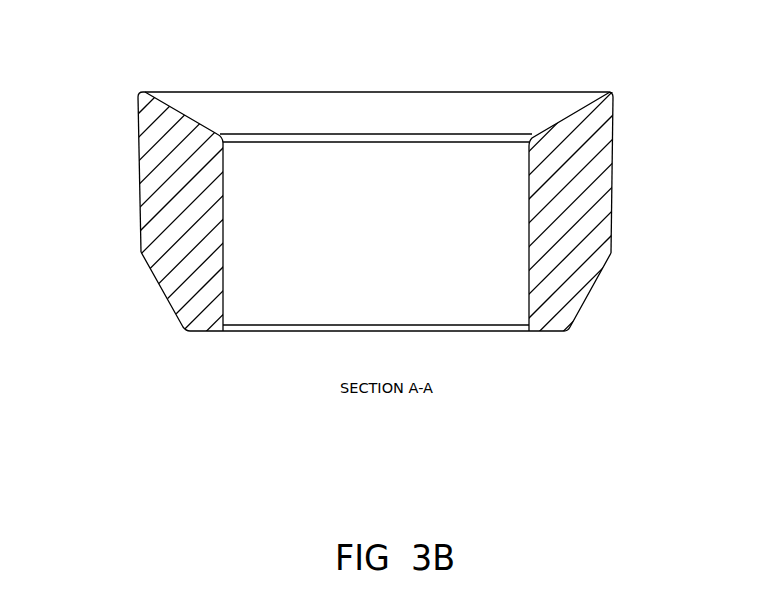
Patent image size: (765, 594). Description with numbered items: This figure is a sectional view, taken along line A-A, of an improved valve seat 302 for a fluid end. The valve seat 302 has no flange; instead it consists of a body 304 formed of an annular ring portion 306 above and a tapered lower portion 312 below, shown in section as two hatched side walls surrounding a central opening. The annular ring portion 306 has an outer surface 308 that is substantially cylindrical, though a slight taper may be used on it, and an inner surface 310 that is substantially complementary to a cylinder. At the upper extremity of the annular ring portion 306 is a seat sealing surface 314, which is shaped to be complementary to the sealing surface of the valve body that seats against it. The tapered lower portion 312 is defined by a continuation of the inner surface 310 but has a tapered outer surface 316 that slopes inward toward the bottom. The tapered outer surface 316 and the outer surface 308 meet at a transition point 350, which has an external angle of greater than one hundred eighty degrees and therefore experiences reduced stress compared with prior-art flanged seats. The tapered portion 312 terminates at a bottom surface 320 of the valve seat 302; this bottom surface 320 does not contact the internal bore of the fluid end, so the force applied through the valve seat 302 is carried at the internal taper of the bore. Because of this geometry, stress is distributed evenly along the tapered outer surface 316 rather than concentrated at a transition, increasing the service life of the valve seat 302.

The valve seat 302 is at (647, 167).
The body 304 is at (155, 242).
The annular ring portion 306 is at (138, 185).
The outer surface 308 is at (140, 211).
The inner surface 310 is at (223, 223).
The tapered lower portion 312 is at (162, 298).
The seat sealing surface 314 is at (145, 92).
The tapered outer surface 316 is at (585, 299).
The bottom surface 320 is at (549, 332).
The transition point 350 is at (611, 252).